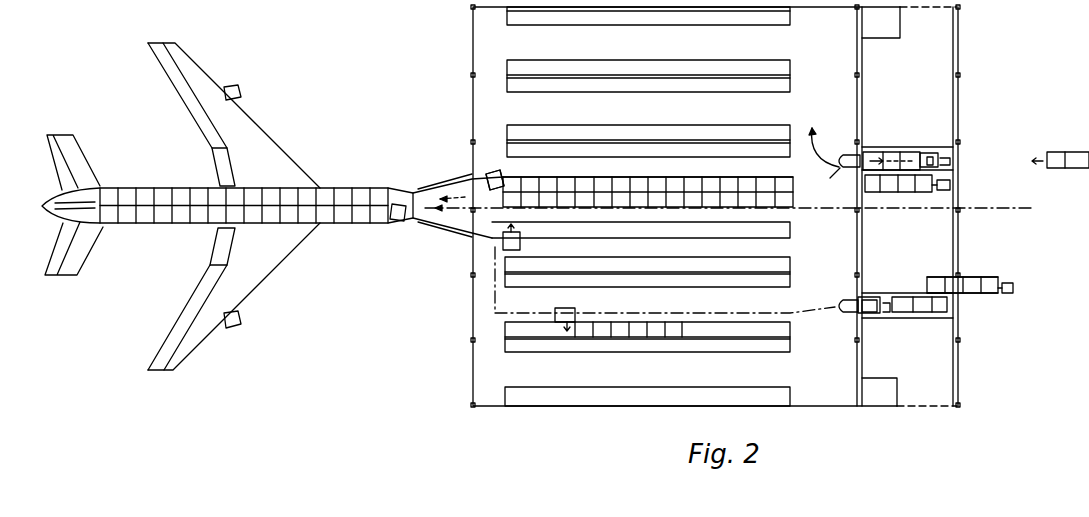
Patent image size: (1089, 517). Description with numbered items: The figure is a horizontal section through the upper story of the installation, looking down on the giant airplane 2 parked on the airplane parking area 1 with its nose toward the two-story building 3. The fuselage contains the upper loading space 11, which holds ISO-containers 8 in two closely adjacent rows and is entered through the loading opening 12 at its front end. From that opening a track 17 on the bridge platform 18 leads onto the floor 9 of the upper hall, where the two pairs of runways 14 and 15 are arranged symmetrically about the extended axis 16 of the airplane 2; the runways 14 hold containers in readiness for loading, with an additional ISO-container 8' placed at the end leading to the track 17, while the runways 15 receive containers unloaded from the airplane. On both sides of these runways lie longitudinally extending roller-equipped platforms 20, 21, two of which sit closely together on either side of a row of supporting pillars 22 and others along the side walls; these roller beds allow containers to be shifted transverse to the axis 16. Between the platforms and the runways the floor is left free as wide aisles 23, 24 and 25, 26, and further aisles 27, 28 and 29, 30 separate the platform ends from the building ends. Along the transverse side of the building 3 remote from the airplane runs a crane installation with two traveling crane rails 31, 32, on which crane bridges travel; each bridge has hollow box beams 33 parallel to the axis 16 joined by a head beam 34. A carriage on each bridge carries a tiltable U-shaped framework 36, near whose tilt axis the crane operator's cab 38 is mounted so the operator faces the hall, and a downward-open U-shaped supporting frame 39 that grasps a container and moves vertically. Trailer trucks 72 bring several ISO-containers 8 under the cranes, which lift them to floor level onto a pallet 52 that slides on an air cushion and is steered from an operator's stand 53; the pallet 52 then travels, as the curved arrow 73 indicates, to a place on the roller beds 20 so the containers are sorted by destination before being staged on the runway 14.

The airplane parking area 1 is at (381, 79).
The giant airplane 2 is at (150, 44).
The two-story building 3 is at (470, 8).
The ISO-container 8 is at (623, 265).
The additional ISO-container 8' is at (492, 169).
The floor of upper hall 9 is at (819, 44).
The upper loading space 11 is at (190, 225).
The loading opening 12 is at (413, 192).
The runway 14 is at (650, 178).
The runway 15 is at (797, 226).
The extended axis of the airplane 16 is at (462, 212).
The track 17 is at (443, 188).
The bridge platform 18 is at (465, 177).
The roller-equipped platform 20 is at (737, 63).
The roller-equipped platform 21 is at (783, 262).
The supporting pillars 22 is at (535, 75).
The aisle 23 is at (670, 53).
The aisle 24 is at (698, 179).
The aisle 25 is at (663, 308).
The aisle 26 is at (670, 258).
The aisle 27 is at (477, 91).
The aisle 28 is at (812, 94).
The aisle 29 is at (477, 331).
The aisle 30 is at (800, 356).
The traveling crane rail 31 is at (863, 95).
The traveling crane rail 32 is at (958, 100).
The crane bridge beam 33 is at (870, 147).
The head beam 34 is at (953, 315).
The U-shaped framework 36 is at (935, 150).
The crane operator's cab 38 is at (887, 314).
The U-shaped supporting frame 39 is at (920, 152).
The pallet 52 is at (848, 154).
The operator's stand 53 is at (824, 179).
The trailer truck 72 is at (940, 192).
The curved arrow 73 is at (814, 148).